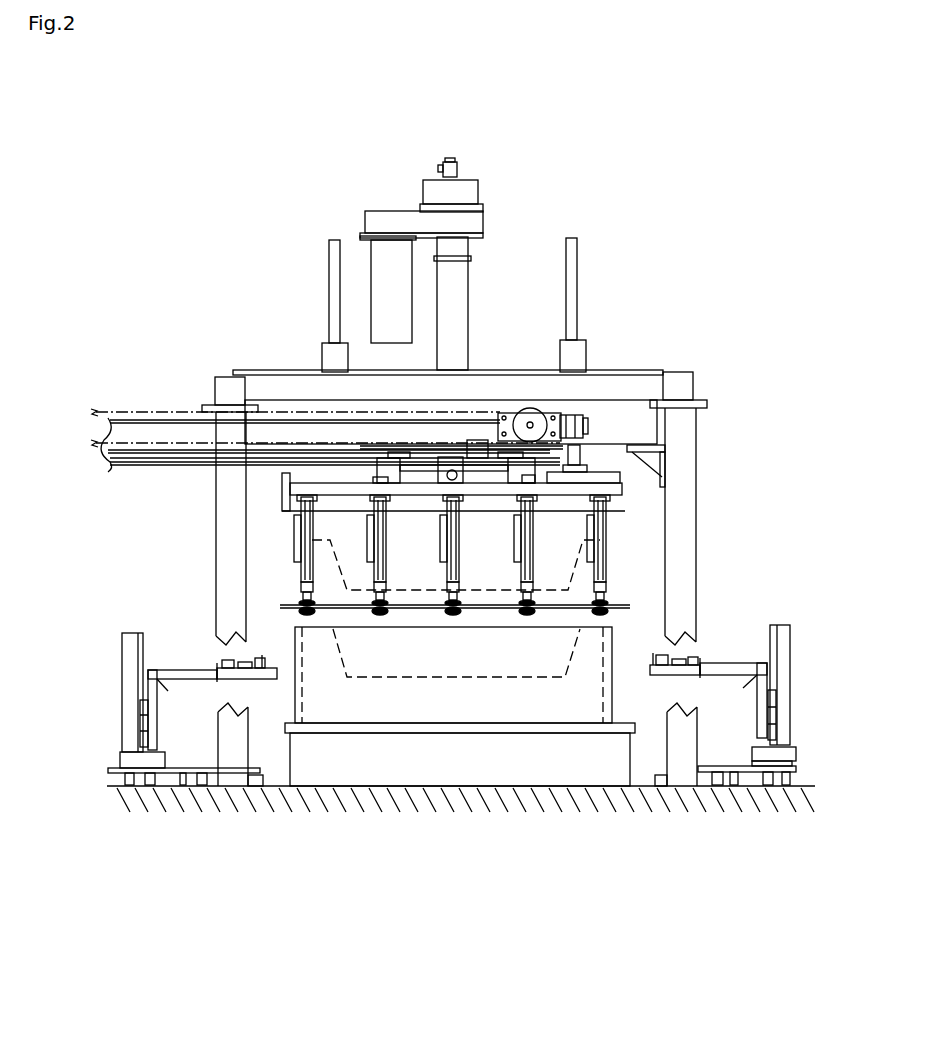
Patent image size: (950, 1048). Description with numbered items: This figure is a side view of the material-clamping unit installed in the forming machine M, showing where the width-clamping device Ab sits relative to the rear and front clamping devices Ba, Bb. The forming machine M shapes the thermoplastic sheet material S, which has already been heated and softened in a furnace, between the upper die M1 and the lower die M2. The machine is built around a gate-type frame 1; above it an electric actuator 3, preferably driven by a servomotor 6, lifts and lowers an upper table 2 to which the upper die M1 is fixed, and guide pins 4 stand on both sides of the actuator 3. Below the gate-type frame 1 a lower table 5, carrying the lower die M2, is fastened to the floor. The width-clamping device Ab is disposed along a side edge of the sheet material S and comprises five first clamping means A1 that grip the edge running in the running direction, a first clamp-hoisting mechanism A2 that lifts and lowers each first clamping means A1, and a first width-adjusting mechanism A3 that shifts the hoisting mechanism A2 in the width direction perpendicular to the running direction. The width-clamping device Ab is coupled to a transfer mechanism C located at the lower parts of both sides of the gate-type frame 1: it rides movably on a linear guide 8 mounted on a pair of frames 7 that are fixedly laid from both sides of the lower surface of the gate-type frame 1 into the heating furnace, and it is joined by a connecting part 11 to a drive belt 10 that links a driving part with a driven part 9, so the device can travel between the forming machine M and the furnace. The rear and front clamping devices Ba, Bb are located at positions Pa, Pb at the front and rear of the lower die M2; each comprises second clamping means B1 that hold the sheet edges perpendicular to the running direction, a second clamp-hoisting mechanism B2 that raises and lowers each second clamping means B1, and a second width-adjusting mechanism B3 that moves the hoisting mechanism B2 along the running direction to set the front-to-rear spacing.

The gate-type frame 1 is at (491, 471).
The upper table 2 is at (526, 468).
The electric actuator 3 is at (501, 221).
The guide pins 4 is at (449, 257).
The lower table 5 is at (460, 800).
The servomotor 6 is at (392, 216).
The frames 7 is at (516, 424).
The linear guide 8 is at (366, 392).
The driven part 9 is at (571, 367).
The drive belt 10 is at (324, 381).
The connecting part 11 is at (461, 367).
The transfer mechanism C is at (633, 355).
The forming machine M is at (477, 417).
The upper die M1 is at (553, 538).
The lower die M2 is at (453, 756).
The thermoplastic sheet material S is at (695, 575).
The width-clamping device Ab is at (340, 536).
The first clamping means A1 is at (381, 598).
The first clamp-hoisting mechanism A2 is at (365, 547).
The first width-adjusting mechanism A3 is at (314, 483).
The rear and front clamping device Ba is at (766, 658).
The rear and front clamping device Bb is at (131, 683).
The second clamping means B1 is at (414, 773).
The second clamp-hoisting mechanism B2 is at (424, 792).
The second width-adjusting mechanism B3 is at (439, 814).
The position Pa is at (661, 801).
The position Pb is at (241, 800).